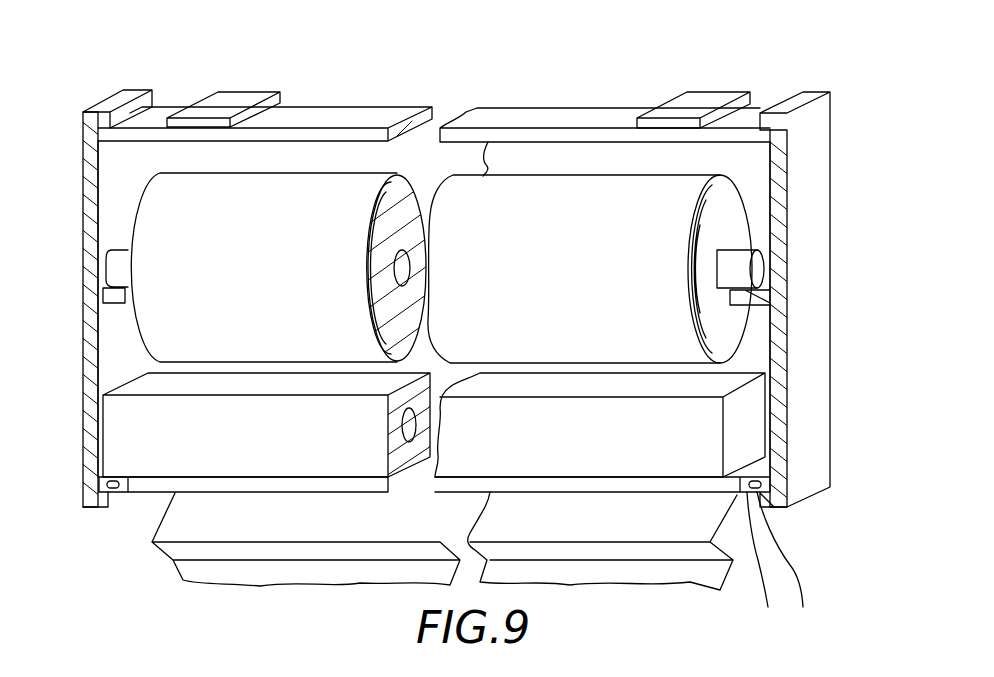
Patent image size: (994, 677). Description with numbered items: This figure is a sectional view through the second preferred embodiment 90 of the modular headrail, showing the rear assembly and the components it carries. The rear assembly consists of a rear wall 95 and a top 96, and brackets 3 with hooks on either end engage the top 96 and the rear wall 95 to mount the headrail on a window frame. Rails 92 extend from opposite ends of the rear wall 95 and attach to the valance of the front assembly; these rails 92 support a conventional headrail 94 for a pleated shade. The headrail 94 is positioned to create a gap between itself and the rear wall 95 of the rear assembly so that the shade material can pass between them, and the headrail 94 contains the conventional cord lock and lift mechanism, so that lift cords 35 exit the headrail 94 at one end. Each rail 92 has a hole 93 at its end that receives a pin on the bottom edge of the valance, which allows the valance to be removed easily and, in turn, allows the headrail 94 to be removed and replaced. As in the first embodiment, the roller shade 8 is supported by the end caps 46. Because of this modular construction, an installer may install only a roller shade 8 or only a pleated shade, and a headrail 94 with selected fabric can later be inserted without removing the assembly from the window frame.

The brackets 3 is at (224, 97).
The roller shade 8 is at (748, 220).
The lift cords 35 is at (800, 583).
The end caps 46 is at (92, 353).
The embodiment 90 is at (851, 276).
The rails 92 is at (102, 490).
The hole 93 is at (113, 489).
The headrail 94 is at (750, 423).
The rear wall 95 is at (747, 163).
The top 96 is at (580, 113).